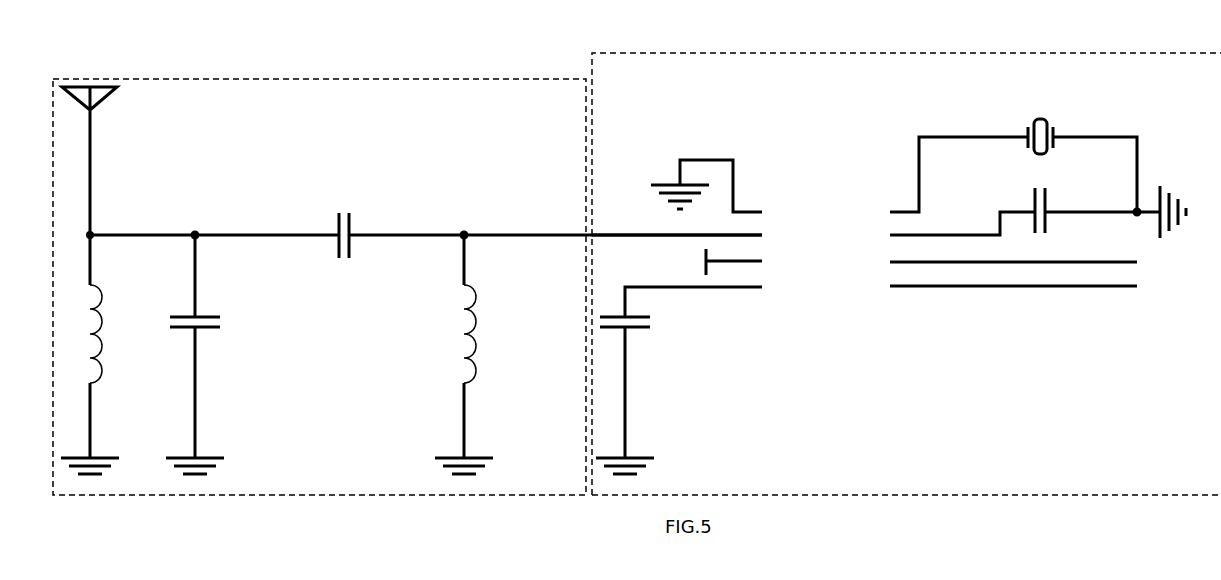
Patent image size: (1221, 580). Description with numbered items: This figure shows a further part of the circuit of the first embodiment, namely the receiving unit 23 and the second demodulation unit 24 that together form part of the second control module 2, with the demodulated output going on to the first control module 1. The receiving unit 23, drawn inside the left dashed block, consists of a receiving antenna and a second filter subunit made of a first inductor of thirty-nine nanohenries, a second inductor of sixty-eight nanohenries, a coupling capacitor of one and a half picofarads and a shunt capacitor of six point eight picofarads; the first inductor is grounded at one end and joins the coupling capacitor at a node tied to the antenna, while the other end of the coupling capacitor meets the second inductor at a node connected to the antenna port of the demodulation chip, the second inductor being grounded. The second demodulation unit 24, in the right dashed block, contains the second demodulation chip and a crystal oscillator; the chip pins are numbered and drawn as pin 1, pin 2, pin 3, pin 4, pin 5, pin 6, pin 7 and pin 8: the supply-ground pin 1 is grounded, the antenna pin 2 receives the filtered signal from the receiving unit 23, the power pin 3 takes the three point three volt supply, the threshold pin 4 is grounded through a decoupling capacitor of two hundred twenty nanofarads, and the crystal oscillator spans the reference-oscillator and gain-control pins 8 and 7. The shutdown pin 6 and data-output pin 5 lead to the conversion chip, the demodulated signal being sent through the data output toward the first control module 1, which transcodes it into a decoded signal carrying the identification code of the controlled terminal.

The receiving unit 23 is at (387, 79).
The second demodulation unit 24 is at (586, 53).
The first control module 1 is at (819, 168).
The second control module 2 is at (849, 180).
The chip pin 3 (VDD) 3 is at (704, 262).
The chip pin 4 (decoupling capacitor) 4 is at (691, 376).
The chip pin 5 (DOUT) 5 is at (1035, 288).
The chip pin 6 (SHUT) 6 is at (1034, 262).
The chip pin 7 (crystal capacitor) 7 is at (1002, 217).
The chip pin 8 (crystal) 8 is at (1026, 155).